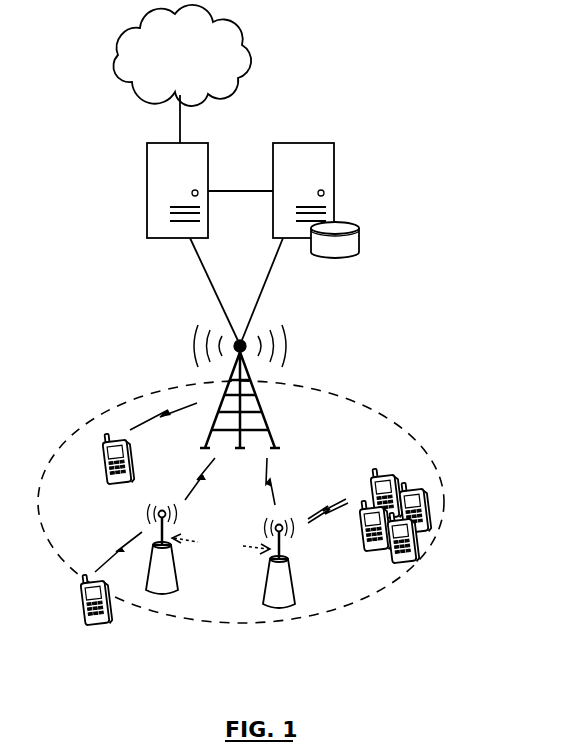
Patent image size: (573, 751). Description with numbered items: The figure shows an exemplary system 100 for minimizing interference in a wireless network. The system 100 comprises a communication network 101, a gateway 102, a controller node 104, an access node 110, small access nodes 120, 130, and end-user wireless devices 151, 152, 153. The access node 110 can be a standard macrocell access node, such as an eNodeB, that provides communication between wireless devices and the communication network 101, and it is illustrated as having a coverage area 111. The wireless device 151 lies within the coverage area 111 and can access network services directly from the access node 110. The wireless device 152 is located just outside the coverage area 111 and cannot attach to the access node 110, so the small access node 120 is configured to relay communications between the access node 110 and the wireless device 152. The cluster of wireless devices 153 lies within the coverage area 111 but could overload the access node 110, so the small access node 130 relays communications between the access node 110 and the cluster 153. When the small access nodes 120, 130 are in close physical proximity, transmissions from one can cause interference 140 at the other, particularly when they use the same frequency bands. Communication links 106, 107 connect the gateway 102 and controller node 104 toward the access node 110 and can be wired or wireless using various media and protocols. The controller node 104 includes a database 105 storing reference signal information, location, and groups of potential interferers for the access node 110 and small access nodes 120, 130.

The system 100 is at (300, 55).
The communication network 101 is at (161, 65).
The gateway 102 is at (147, 165).
The controller node 104 is at (334, 158).
The database 105 is at (358, 226).
The communication link 106 is at (207, 275).
The communication link 107 is at (270, 272).
The access node 110 is at (262, 416).
The coverage area 111 is at (380, 412).
The small access node 120 is at (174, 590).
The small access node 130 is at (296, 590).
The interference 140 is at (221, 546).
The wireless device 151 is at (106, 478).
The wireless device 152 is at (86, 625).
The cluster of wireless devices 153 is at (440, 500).